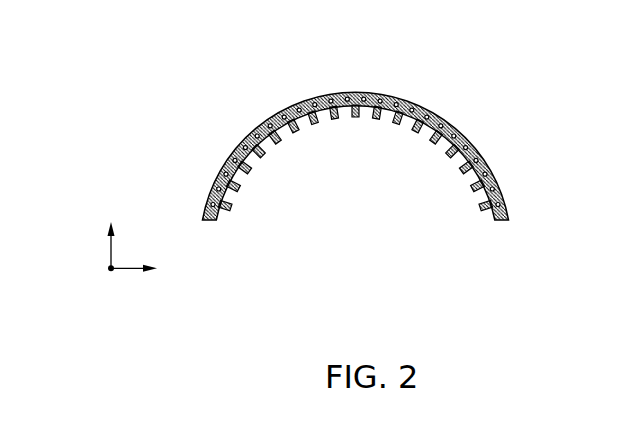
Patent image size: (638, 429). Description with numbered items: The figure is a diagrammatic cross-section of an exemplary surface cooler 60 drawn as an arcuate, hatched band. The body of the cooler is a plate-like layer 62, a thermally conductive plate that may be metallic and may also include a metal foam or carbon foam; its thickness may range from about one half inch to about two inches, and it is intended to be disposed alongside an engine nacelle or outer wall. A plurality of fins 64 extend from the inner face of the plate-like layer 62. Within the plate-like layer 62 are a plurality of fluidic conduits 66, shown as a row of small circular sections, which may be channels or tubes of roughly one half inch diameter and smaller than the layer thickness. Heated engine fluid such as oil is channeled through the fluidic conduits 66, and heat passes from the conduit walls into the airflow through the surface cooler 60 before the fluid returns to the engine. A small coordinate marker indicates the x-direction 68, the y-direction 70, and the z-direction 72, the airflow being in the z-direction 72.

The surface cooler 60 is at (513, 65).
The plate-like layer 62 is at (474, 148).
The fins 64 is at (475, 187).
The fluidic conduits 66 is at (354, 92).
The x-direction 68 is at (138, 272).
The y-direction 70 is at (110, 245).
The z-direction 72 is at (106, 270).